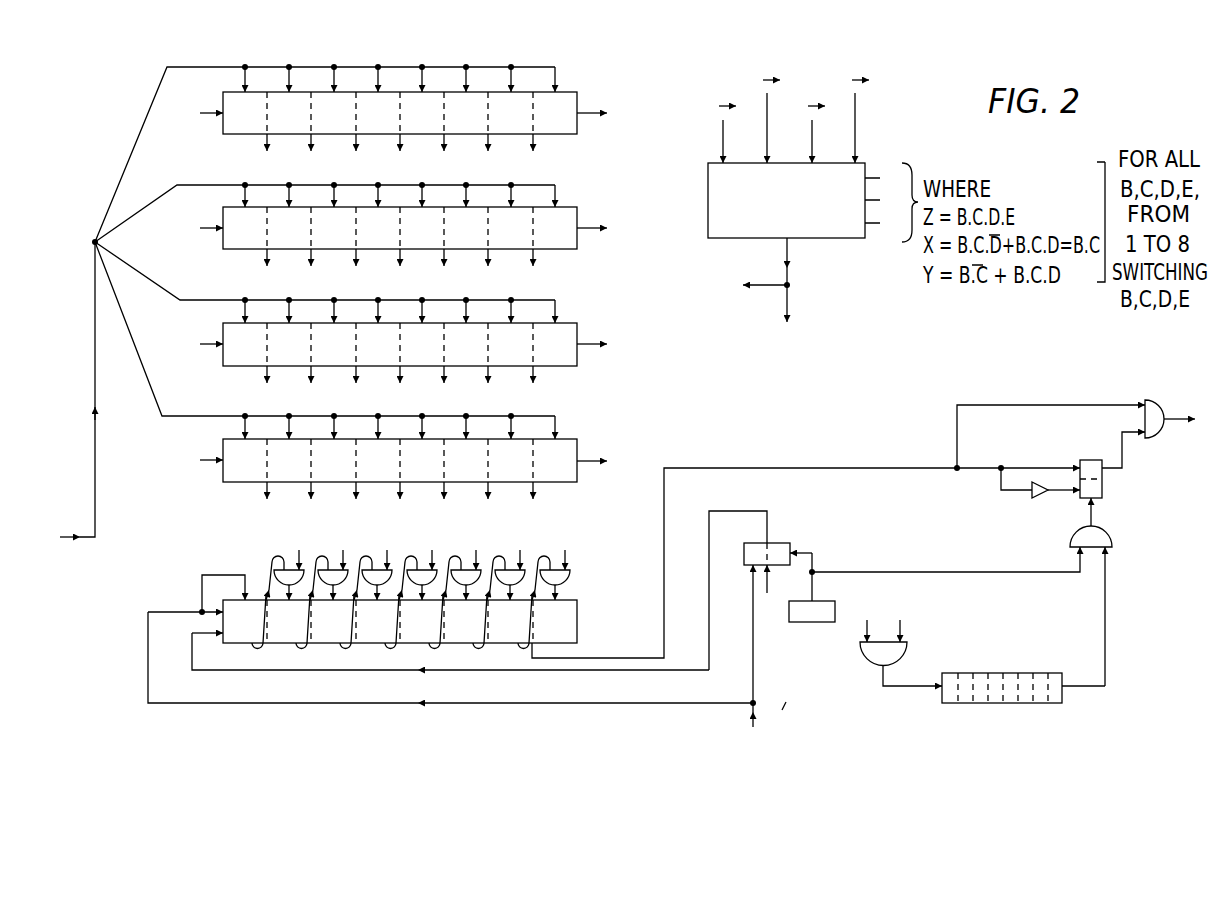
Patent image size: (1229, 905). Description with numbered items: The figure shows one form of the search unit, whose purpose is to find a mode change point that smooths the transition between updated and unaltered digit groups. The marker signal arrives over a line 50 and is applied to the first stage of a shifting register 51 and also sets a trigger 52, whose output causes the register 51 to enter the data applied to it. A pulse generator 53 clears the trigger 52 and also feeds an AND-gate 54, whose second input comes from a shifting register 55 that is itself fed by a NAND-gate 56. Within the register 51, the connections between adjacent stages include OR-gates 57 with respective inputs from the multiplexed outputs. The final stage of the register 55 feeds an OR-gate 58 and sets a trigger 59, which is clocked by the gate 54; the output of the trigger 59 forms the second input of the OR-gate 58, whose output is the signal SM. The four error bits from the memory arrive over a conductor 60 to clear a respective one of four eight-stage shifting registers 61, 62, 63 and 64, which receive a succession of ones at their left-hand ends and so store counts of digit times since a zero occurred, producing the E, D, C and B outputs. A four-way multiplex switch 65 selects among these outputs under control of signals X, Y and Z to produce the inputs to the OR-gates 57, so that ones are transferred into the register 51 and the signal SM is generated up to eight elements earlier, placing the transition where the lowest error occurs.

The line 50 is at (750, 712).
The shifting register 51 is at (237, 643).
The trigger 52 is at (785, 543).
The pulse generator 53 is at (808, 622).
The AND-gate 54 is at (1110, 535).
The shifting register 55 is at (1015, 673).
The NAND-gate 56 is at (904, 652).
The OR-gates 57 is at (573, 582).
The OR-gate 58 is at (1152, 400).
The trigger 59 is at (1092, 460).
The conductor 60 is at (95, 503).
The shifting register 61 is at (222, 128).
The shifting register 62 is at (222, 245).
The shifting register 63 is at (222, 361).
The shifting register 64 is at (222, 476).
The four-way multiplex switch 65 is at (708, 190).